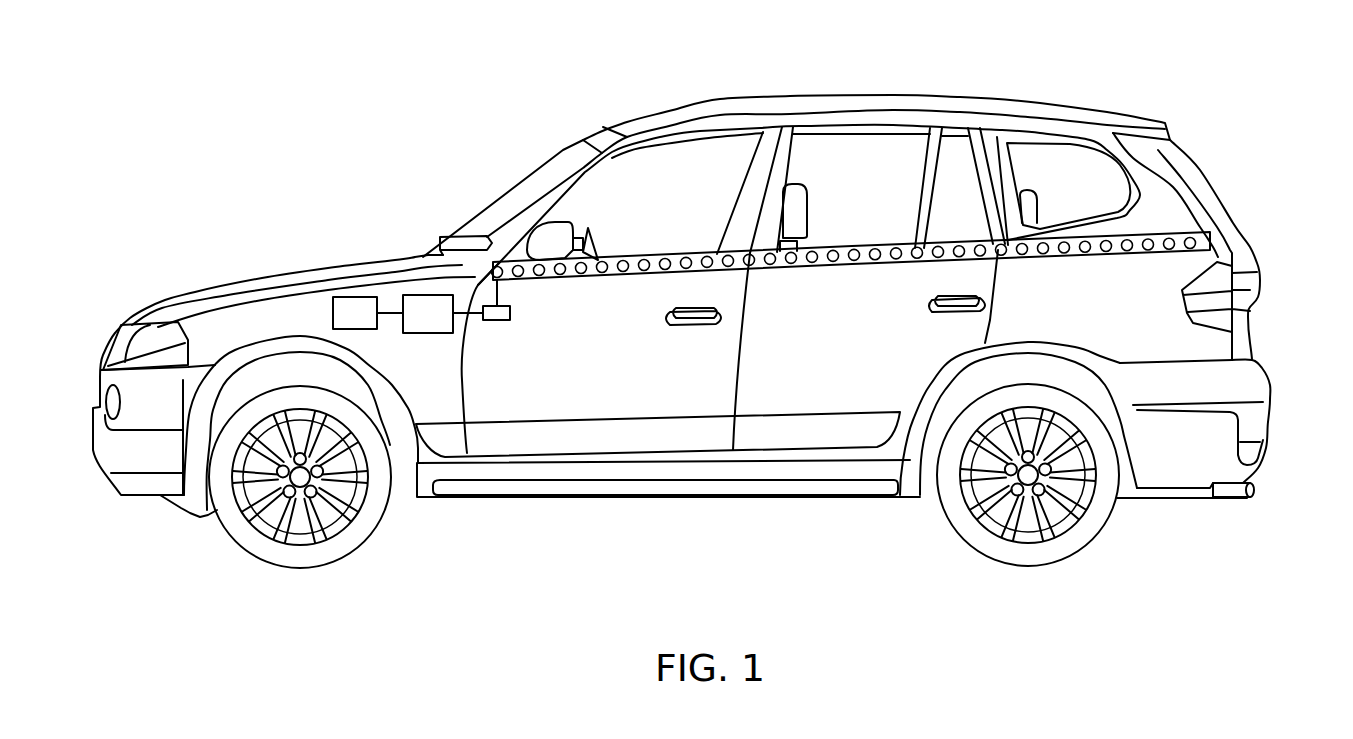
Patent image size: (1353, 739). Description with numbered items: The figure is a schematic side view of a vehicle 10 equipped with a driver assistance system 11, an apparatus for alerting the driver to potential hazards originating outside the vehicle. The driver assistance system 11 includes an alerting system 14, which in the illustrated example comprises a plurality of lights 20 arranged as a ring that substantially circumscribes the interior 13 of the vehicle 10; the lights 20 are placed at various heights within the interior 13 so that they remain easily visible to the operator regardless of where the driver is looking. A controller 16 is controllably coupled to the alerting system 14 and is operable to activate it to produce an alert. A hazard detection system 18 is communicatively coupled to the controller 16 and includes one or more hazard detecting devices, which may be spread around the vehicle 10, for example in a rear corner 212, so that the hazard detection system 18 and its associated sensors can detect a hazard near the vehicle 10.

The vehicle 10 is at (711, 315).
The driver assistance system 11 is at (252, 246).
The interior 13 is at (685, 215).
The alerting system 14 is at (498, 321).
The controller 16 is at (428, 333).
The hazard detection system 18 is at (333, 312).
The lights 20 is at (876, 249).
The rear corner 212 is at (1257, 421).